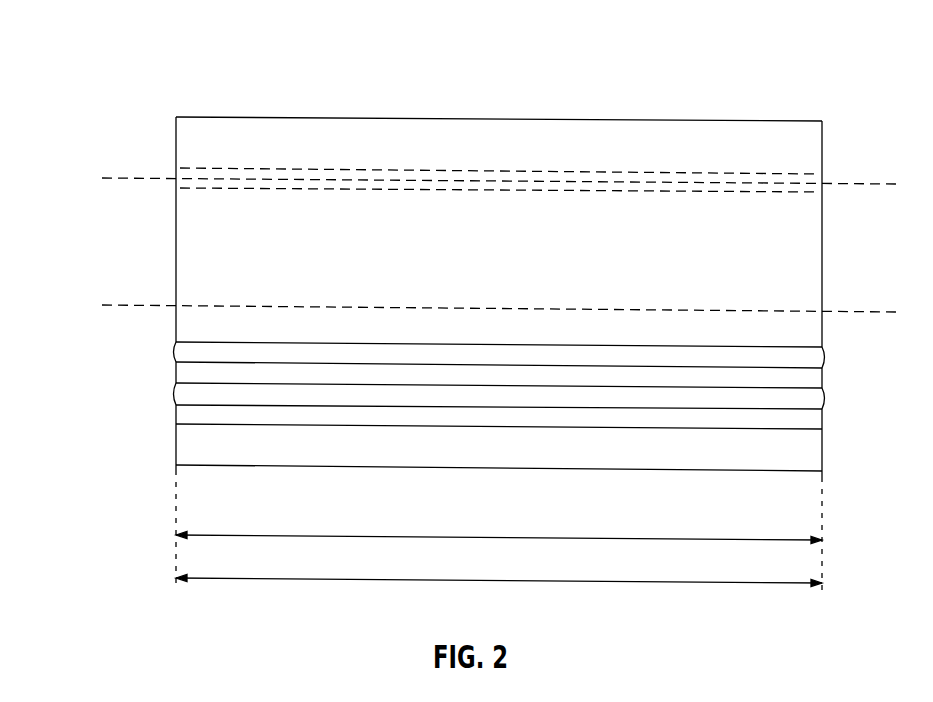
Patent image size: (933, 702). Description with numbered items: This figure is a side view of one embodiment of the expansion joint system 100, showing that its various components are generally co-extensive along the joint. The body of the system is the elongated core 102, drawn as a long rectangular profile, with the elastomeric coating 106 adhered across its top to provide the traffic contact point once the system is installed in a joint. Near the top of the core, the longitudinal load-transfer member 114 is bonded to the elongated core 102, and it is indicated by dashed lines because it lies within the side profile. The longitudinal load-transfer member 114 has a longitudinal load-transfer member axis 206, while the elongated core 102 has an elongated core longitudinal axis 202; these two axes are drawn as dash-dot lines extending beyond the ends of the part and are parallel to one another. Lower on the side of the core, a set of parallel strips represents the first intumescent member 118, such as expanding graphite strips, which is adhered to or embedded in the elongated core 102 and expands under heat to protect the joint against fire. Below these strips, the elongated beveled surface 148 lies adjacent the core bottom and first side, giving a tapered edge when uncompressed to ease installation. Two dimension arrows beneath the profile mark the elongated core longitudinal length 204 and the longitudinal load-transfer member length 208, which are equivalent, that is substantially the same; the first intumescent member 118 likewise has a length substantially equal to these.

The expansion joint system 100 is at (84, 78).
The elongated core 102 is at (192, 238).
The elastomeric coating 106 is at (283, 131).
The longitudinal load-transfer member 114 is at (197, 166).
The first intumescent member 118 is at (190, 397).
The elongated beveled surface 148 is at (190, 439).
The elongated core longitudinal axis 202 is at (838, 311).
The elongated core longitudinal length 204 is at (498, 536).
The longitudinal load-transfer member axis 206 is at (838, 183).
The longitudinal load-transfer member length 208 is at (498, 581).